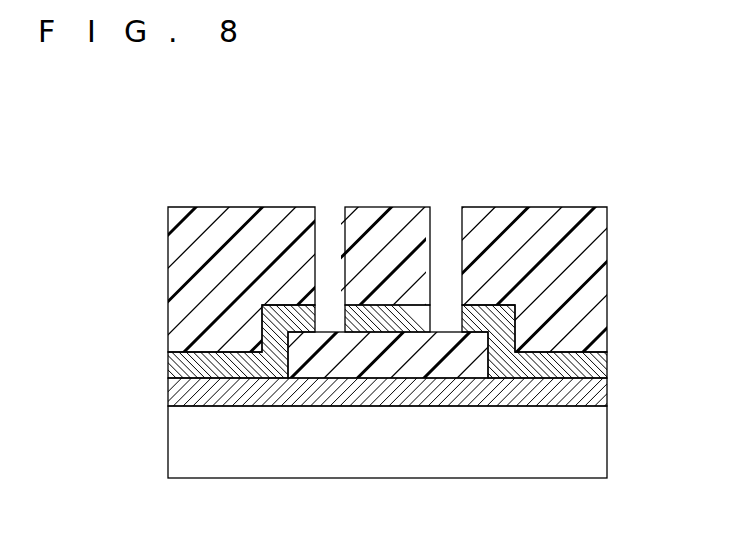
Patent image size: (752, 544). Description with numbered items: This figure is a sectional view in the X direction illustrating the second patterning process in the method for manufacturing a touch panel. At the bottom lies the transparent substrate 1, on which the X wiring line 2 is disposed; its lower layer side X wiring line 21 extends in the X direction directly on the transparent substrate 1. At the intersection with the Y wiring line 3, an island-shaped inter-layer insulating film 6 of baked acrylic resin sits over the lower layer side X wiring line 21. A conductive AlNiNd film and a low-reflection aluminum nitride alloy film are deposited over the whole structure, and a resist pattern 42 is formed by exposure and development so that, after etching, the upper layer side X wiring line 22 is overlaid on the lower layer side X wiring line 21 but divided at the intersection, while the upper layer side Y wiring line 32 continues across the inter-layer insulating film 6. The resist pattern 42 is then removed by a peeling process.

The transparent substrate 1 is at (592, 447).
The X wiring line 2 is at (376, 288).
The lower layer side X wiring line 21 is at (596, 401).
The upper layer side X wiring line 22 is at (497, 318).
The Y wiring line 3 is at (365, 288).
The upper layer side Y wiring line 32 is at (395, 310).
The resist pattern 42 is at (243, 240).
The inter-layer insulating film 6 is at (391, 360).